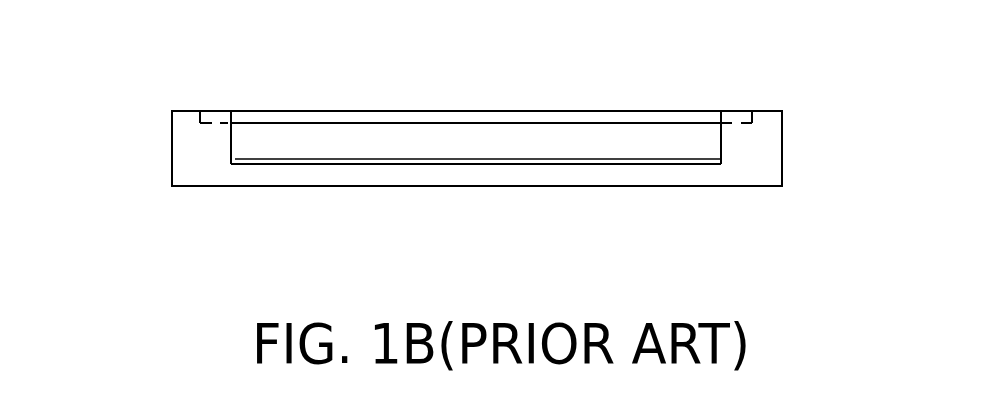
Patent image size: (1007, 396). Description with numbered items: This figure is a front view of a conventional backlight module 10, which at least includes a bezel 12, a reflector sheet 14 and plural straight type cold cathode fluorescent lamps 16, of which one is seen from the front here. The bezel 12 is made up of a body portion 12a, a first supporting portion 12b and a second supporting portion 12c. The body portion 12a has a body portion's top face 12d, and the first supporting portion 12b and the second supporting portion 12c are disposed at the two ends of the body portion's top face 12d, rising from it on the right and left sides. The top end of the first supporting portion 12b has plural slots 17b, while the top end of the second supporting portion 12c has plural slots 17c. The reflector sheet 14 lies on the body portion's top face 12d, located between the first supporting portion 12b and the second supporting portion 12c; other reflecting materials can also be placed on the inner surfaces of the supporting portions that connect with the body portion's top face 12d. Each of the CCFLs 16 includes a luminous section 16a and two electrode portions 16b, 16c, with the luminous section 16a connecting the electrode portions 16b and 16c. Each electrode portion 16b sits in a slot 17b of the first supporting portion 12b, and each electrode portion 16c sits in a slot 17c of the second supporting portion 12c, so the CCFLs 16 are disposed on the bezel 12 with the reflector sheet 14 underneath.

The backlight module 10 is at (905, 44).
The bezel 12 is at (786, 138).
The body portion 12a is at (503, 175).
The first supporting portion 12b is at (757, 163).
The second supporting portion 12c is at (178, 143).
The body portion's top face 12d is at (618, 165).
The reflector sheet 14 is at (315, 158).
The cold cathode fluorescent lamp 16 is at (393, 115).
The luminous section 16a is at (527, 118).
The electrode portion 16b is at (742, 108).
The electrode portion 16c is at (222, 107).
The slot 17b is at (757, 118).
The slot 17c is at (196, 116).